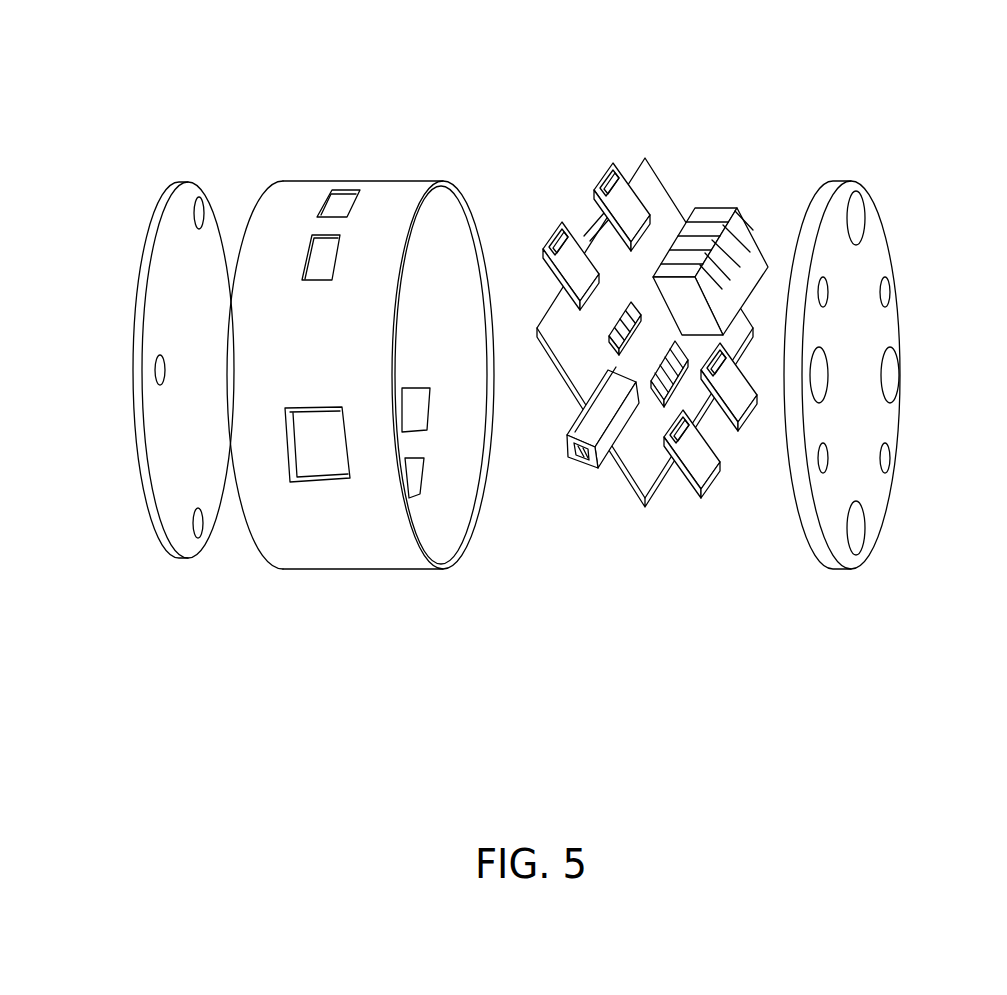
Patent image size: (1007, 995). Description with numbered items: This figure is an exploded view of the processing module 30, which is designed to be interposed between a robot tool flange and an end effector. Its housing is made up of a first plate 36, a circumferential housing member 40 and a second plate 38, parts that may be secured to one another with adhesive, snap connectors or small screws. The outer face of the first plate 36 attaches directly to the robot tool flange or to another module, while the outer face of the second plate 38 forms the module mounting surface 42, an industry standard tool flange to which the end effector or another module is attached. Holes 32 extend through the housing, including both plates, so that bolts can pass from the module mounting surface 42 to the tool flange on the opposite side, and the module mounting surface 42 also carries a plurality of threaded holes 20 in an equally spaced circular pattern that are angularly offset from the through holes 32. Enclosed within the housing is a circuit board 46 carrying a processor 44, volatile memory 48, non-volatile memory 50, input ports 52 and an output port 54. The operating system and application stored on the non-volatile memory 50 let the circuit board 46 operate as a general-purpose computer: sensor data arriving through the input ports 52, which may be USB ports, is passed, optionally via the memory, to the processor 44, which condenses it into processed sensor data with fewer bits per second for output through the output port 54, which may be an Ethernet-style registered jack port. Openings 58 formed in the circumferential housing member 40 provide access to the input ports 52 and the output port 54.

The processing module 30 is at (583, 55).
The first plate 36 is at (138, 317).
The circumferential housing member 40 is at (333, 572).
The openings 58 is at (360, 198).
The circuit board 46 is at (668, 196).
The processor 44 is at (748, 228).
The input ports 52 is at (597, 176).
The volatile memory 48 is at (610, 322).
The non-volatile memory 50 is at (658, 392).
The output port 54 is at (577, 464).
The second plate 38 is at (905, 340).
The module mounting surface 42 is at (833, 497).
The holes 32 is at (203, 200).
The threaded holes 20 is at (897, 290).